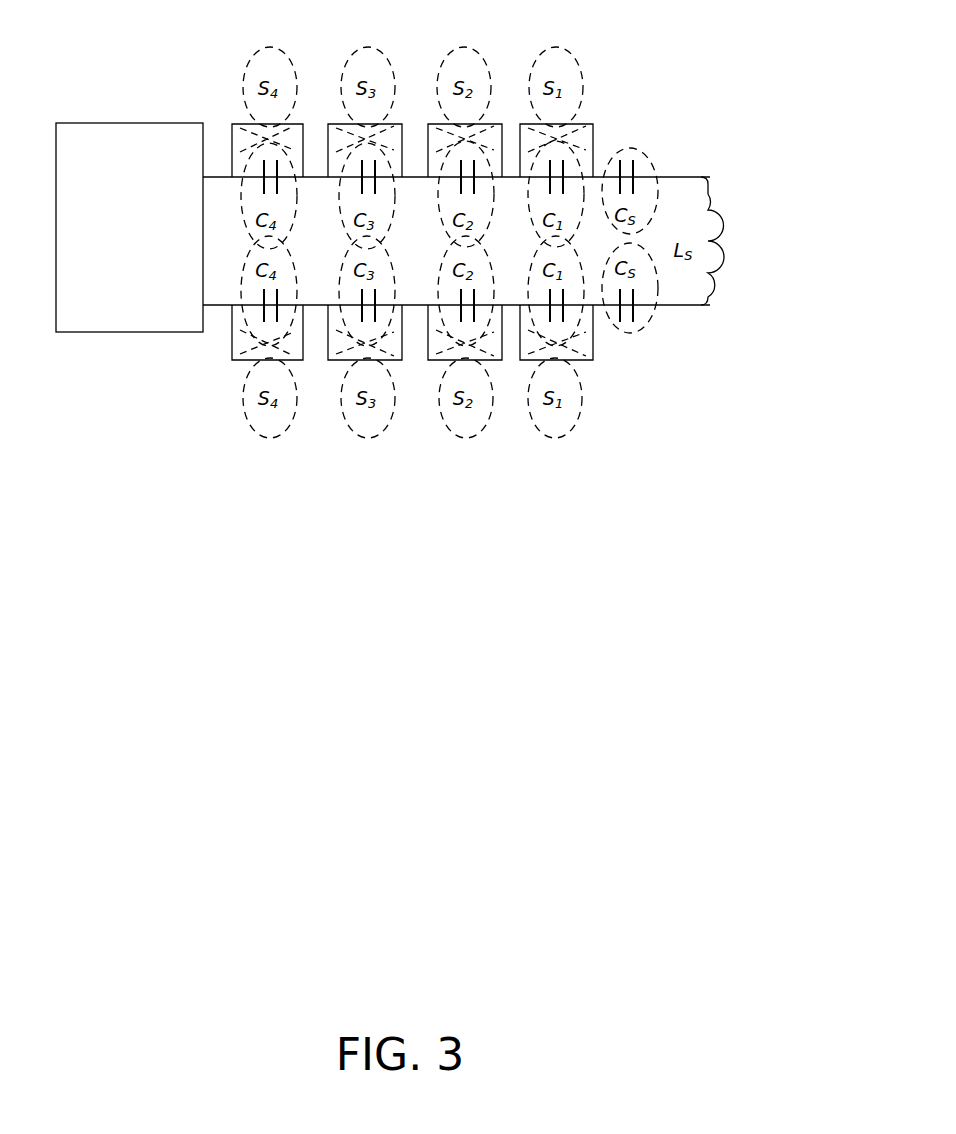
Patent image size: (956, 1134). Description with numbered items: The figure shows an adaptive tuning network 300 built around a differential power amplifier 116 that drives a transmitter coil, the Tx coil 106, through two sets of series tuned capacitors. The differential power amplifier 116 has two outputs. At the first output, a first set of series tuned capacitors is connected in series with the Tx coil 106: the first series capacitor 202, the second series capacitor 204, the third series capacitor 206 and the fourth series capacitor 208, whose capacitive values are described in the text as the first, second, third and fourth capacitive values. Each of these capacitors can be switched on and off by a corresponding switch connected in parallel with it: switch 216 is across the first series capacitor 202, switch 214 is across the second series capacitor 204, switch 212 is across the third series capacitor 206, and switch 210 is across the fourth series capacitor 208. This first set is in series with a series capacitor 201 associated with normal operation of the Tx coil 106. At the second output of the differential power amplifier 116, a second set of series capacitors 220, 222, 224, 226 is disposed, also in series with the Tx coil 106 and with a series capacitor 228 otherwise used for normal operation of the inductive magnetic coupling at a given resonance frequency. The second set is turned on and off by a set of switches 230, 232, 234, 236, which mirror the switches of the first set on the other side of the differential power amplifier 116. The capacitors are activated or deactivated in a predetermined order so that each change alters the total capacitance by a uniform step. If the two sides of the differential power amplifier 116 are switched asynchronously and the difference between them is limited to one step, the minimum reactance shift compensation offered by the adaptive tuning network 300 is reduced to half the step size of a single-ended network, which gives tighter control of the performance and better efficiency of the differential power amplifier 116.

The differential power amplifier 116 is at (117, 123).
The fourth series capacitor 208 is at (250, 150).
The switch 210 is at (270, 45).
The switch 212 is at (368, 45).
The switch 214 is at (463, 45).
The switch 216 is at (560, 52).
The first series capacitor 202 is at (577, 157).
The series capacitor 201 is at (627, 153).
The Tx coil 106 is at (717, 247).
The third series capacitor 206 is at (287, 245).
The second series capacitor 204 is at (384, 245).
The series capacitor 220 is at (232, 360).
The switch 236 is at (257, 427).
The series capacitor 222 is at (348, 333).
The switch 234 is at (367, 437).
The series capacitor 224 is at (440, 315).
The switch 232 is at (452, 430).
The series capacitor 226 is at (578, 323).
The series capacitor 228 is at (627, 332).
The switch 230 is at (553, 433).
The adaptive tuning network 300 is at (372, 1012).